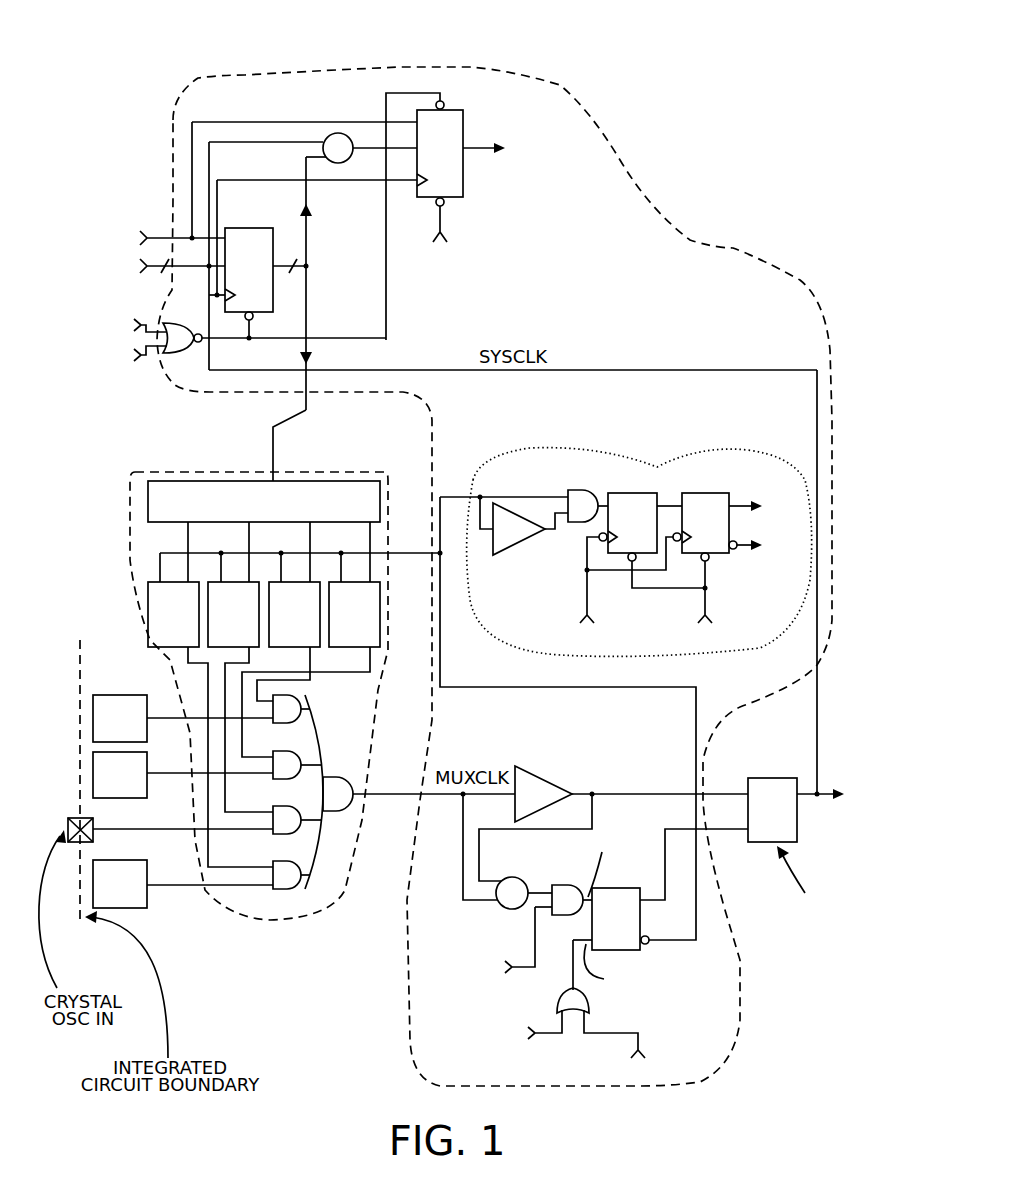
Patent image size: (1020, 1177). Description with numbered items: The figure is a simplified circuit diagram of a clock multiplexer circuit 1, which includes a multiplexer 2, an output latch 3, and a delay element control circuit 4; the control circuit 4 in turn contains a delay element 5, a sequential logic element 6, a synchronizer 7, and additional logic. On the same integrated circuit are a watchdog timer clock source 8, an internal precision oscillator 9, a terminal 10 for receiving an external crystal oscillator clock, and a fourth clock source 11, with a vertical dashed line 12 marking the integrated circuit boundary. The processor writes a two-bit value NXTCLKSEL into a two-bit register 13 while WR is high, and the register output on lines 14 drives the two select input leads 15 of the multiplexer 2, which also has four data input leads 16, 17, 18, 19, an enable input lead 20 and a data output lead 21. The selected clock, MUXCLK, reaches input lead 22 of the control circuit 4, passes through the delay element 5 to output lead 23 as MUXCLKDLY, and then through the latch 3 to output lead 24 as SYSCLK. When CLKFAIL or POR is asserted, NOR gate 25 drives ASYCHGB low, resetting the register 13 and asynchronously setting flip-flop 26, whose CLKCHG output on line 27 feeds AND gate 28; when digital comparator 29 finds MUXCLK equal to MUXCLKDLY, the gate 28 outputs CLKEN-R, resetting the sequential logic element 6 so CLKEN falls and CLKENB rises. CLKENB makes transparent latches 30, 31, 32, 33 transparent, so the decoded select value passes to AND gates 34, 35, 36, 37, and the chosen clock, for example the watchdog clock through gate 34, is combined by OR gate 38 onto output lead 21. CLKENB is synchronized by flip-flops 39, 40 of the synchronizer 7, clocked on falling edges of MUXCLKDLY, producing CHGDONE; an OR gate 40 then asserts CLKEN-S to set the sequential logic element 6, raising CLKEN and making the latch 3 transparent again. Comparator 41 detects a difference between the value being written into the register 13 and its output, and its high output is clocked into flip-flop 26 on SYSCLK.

The clock multiplexer circuit 1 is at (706, 79).
The multiplexer 2 is at (193, 469).
The latch 3 is at (767, 823).
The delay element control circuit 4 is at (246, 77).
The delay element 5 is at (541, 779).
The sequential logic element 6 is at (611, 930).
The synchronizer 7 is at (653, 464).
The watchdog timer clock source (WDT) 8 is at (114, 740).
The internal precision oscillator (IPO) 9 is at (114, 797).
The terminal 10 is at (70, 818).
The fourth clock source (CS) 11 is at (112, 905).
The vertical dashed line 12 is at (78, 693).
The two-bit register 13 is at (241, 300).
The lines 14 is at (312, 290).
The select input leads 15 is at (275, 470).
The data input lead 16 is at (175, 717).
The data input lead 17 is at (175, 772).
The third data input lead 18 is at (175, 827).
The data input lead 19 is at (175, 883).
The enable input lead 20 is at (384, 553).
The data output lead 21 is at (371, 794).
The input lead 22 is at (430, 794).
The output lead 23 is at (712, 794).
The output lead 24 is at (828, 789).
The NOR gate 25 is at (176, 324).
The flip-flop 26 is at (432, 181).
The line 27 is at (478, 148).
The AND gate 28 is at (563, 885).
The digital comparator 29 is at (512, 876).
The transparent latch 30 is at (165, 645).
The transparent latch 31 is at (225, 645).
The transparent latch 32 is at (286, 645).
The transparent latch 33 is at (346, 645).
The AND gate 34 is at (272, 722).
The AND gate 35 is at (293, 751).
The AND gate 36 is at (293, 806).
The AND gate 37 is at (293, 861).
The OR gate 38 is at (334, 778).
The flip-flop 39 is at (623, 536).
The flip-flop 40 is at (554, 1000).
The comparator 41 is at (333, 133).